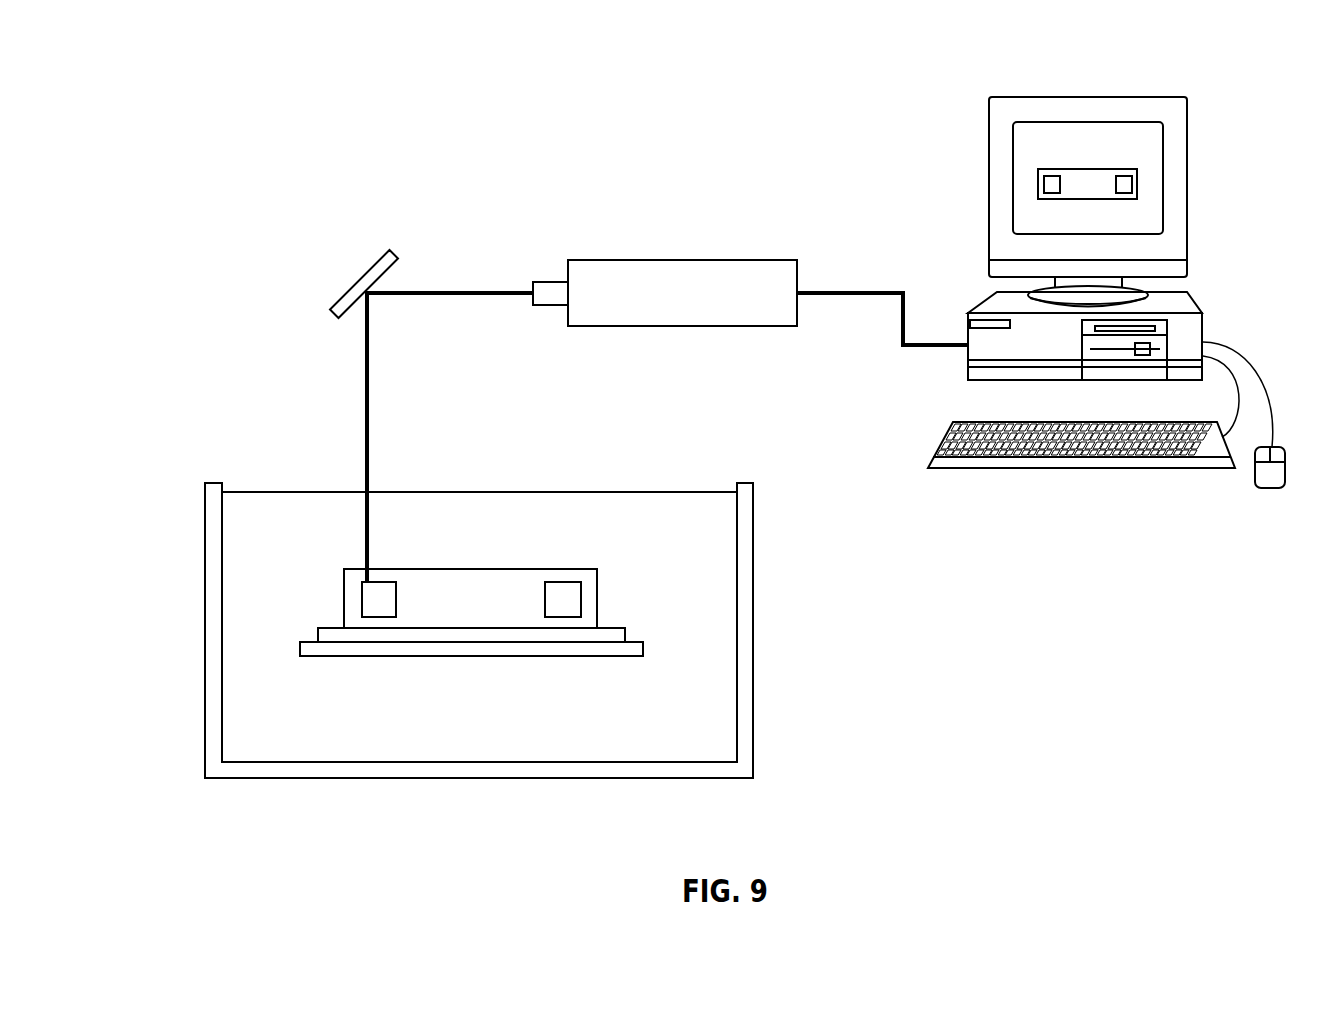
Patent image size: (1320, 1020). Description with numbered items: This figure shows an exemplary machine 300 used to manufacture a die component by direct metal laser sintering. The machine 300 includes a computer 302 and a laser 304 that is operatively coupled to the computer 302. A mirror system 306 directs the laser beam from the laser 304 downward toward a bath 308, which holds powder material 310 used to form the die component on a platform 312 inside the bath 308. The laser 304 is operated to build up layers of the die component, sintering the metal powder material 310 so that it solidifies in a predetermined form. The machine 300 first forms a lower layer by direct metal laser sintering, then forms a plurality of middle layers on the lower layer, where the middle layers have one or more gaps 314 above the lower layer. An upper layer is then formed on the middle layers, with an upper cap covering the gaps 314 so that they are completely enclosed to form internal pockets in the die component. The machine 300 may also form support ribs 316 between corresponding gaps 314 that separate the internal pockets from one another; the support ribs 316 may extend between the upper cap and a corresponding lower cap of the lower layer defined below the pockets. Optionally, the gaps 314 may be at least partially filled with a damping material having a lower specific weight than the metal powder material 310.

The machine 300 is at (512, 147).
The computer 302 is at (1004, 88).
The laser 304 is at (680, 250).
The mirror system 306 is at (378, 258).
The bath 308 is at (747, 615).
The powder material 310 is at (715, 685).
The platform 312 is at (547, 643).
The gaps 314 is at (382, 595).
The support ribs 316 is at (392, 607).